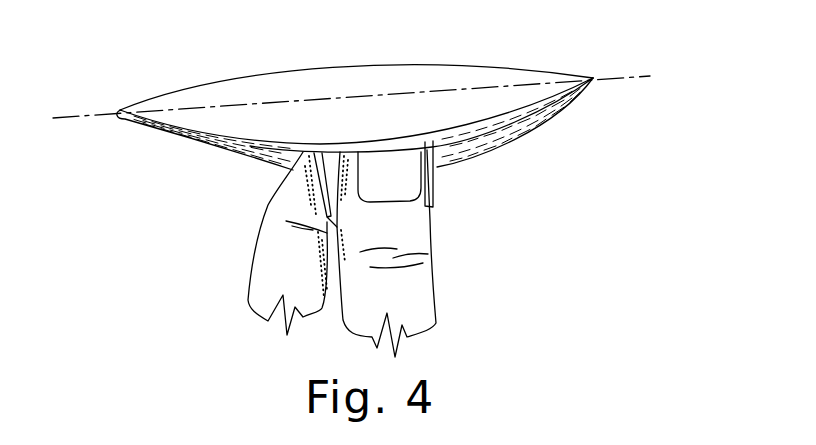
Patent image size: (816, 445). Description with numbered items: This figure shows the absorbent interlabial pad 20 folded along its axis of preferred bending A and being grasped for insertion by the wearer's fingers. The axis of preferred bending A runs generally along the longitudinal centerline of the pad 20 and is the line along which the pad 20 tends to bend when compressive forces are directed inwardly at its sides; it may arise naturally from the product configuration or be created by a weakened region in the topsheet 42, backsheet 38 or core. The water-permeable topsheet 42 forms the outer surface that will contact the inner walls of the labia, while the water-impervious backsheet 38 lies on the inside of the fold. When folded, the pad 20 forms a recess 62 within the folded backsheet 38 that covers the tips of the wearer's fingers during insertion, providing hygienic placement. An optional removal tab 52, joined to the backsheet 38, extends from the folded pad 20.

The absorbent interlabial pad 20 is at (332, 120).
The topsheet 42 is at (487, 77).
The backsheet 38 is at (187, 150).
The removal tab 52 is at (333, 172).
The recess 62 is at (480, 132).
The axis of preferred bending A is at (613, 78).